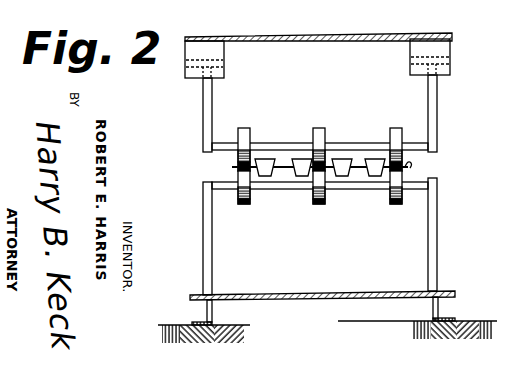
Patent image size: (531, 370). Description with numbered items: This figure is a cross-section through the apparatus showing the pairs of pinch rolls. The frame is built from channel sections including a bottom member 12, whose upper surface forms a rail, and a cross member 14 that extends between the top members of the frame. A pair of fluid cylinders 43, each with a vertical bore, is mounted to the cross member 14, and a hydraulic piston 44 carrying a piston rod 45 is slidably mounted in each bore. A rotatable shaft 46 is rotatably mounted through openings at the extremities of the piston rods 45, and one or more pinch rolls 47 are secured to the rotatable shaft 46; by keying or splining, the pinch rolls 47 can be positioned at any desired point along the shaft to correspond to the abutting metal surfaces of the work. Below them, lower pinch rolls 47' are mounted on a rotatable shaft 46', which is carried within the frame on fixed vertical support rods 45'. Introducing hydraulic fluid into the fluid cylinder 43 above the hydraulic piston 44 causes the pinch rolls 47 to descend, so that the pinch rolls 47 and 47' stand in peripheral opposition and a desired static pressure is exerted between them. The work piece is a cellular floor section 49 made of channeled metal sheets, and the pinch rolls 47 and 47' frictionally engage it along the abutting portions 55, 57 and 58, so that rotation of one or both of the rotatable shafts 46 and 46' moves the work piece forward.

The bottom member 12 is at (212, 313).
The cross member 14 is at (343, 11).
The fluid cylinder 43 is at (216, 58).
The hydraulic piston 44 is at (226, 62).
The piston rod 45 is at (316, 113).
The fixed vertical support rod 45' is at (322, 236).
The rotatable shaft 46 is at (320, 131).
The rotatable shaft 46' is at (320, 199).
The pinch roll 47 is at (330, 140).
The lower pinch roll 47' is at (333, 196).
The cellular floor section 49 is at (265, 159).
The abutting metal portion 55 is at (324, 159).
The abutting metal portion 57 is at (412, 168).
The abutting metal portion 58 is at (236, 167).